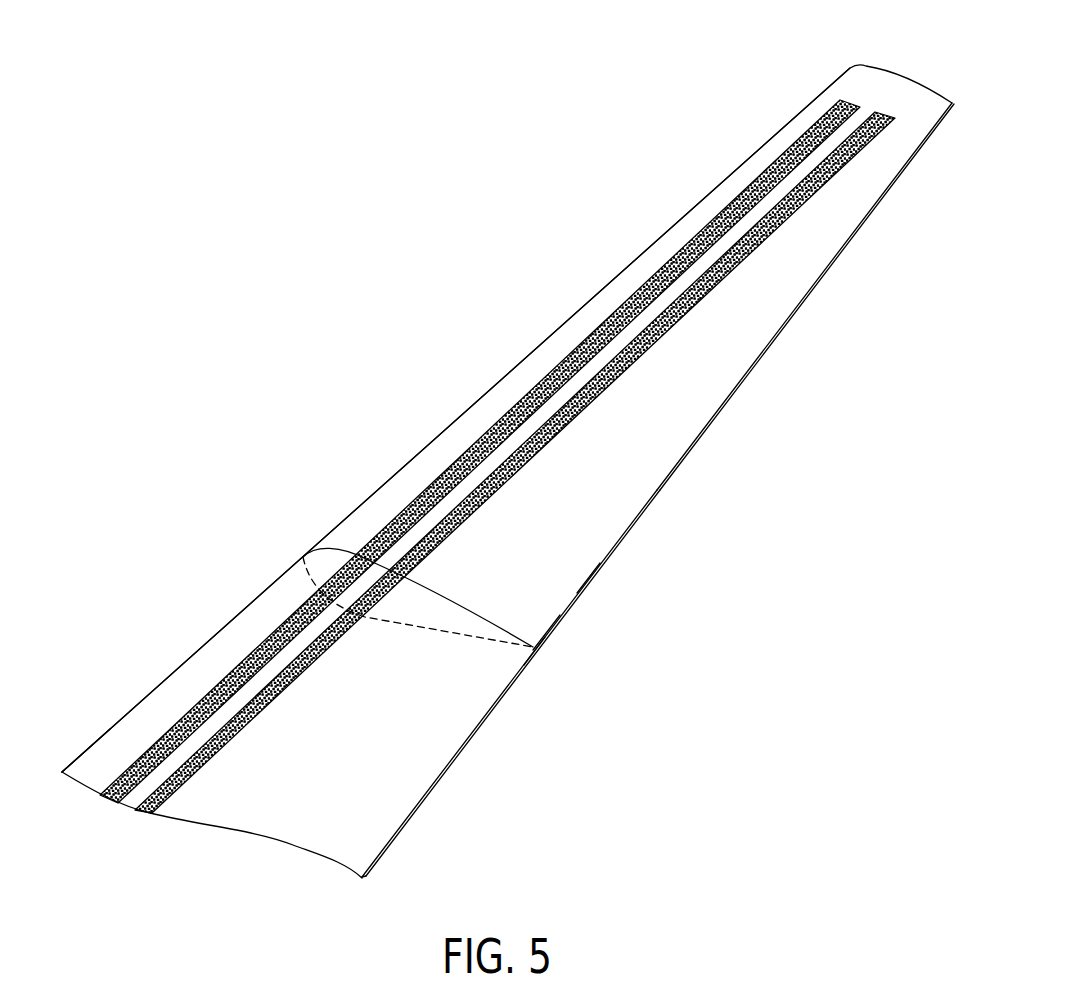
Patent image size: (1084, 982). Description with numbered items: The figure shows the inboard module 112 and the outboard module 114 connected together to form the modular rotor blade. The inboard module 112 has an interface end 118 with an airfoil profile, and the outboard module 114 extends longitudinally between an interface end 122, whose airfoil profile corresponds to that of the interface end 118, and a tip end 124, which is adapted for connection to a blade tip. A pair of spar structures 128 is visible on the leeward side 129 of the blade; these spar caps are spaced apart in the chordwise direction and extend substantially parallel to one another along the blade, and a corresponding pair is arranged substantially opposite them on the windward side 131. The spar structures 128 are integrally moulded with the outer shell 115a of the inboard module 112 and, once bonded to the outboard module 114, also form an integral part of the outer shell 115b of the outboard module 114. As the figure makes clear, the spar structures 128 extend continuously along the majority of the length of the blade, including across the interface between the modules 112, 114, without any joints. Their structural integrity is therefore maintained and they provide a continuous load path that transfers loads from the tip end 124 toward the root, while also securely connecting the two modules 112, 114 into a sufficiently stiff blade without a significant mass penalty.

The inboard module 112 is at (68, 767).
The outboard module 114 is at (590, 303).
The outer shell of the inboard module 115a is at (423, 802).
The outer shell of the outboard module 115b is at (718, 412).
The interface end of the inboard module 118 is at (538, 663).
The interface end of the outboard module 122 is at (550, 652).
The tip end 124 is at (822, 85).
The spar structures 128 is at (215, 688).
The leeward side 129 is at (564, 533).
The windward side 131 is at (588, 594).